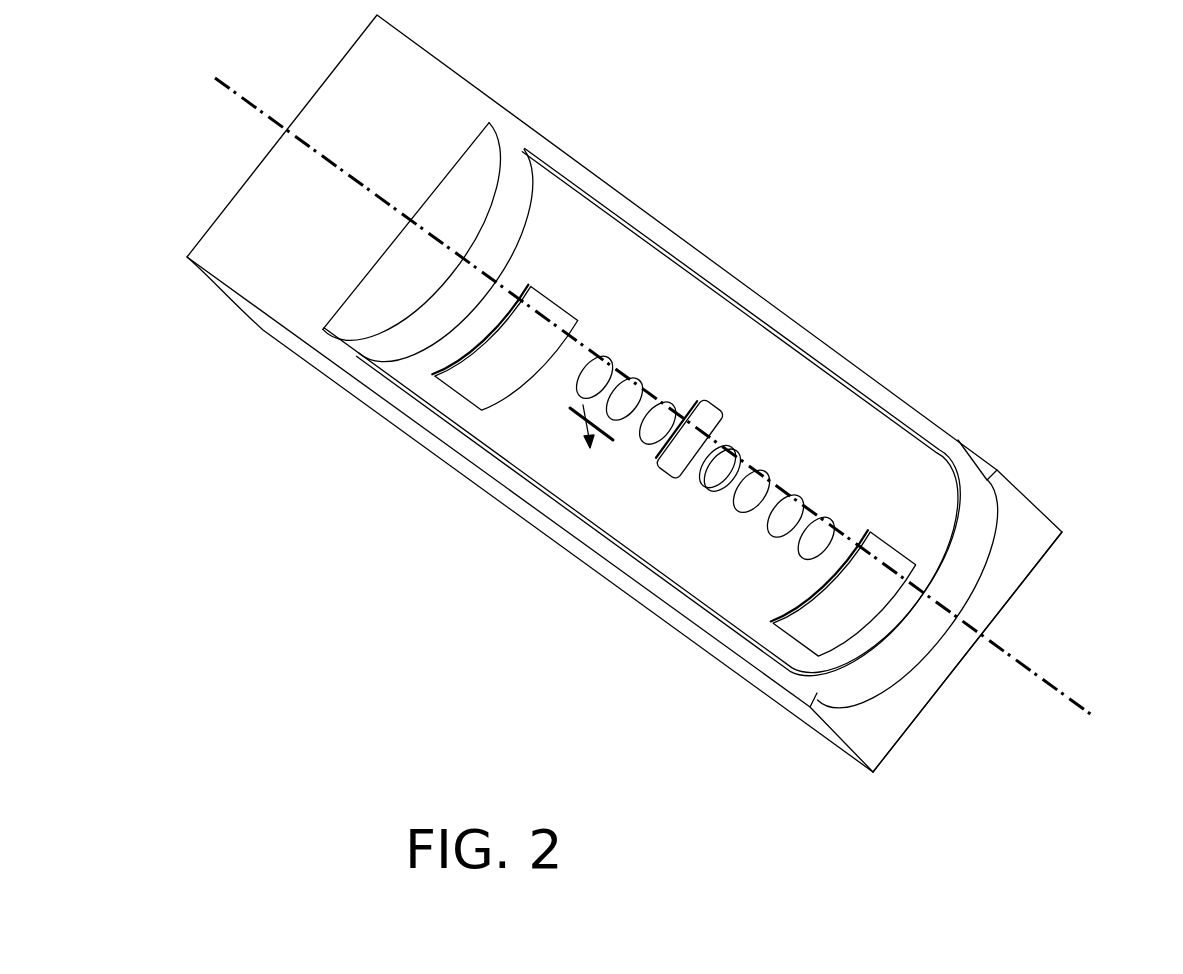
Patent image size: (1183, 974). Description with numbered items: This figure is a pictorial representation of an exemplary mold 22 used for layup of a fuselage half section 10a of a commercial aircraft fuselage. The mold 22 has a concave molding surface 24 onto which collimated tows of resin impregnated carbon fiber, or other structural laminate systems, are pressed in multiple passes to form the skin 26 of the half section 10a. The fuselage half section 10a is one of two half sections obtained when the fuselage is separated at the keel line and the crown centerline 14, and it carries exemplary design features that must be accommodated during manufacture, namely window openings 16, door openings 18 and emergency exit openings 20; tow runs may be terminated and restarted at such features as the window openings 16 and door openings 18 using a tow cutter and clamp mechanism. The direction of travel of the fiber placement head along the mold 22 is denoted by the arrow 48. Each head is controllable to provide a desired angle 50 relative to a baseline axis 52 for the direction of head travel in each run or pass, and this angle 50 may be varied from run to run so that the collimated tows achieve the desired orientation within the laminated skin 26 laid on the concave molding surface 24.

The crown centerline 14 is at (740, 307).
The fuselage half section 10a is at (830, 420).
The mold 22 is at (930, 422).
The concave molding surface 24 is at (928, 643).
The skin 26 is at (550, 457).
The emergency exit openings 20 is at (672, 458).
The arrow 48 is at (510, 523).
The angle 50 is at (500, 543).
The window openings 16 is at (755, 490).
The door openings 18 is at (837, 617).
The baseline axis 52 is at (1057, 688).